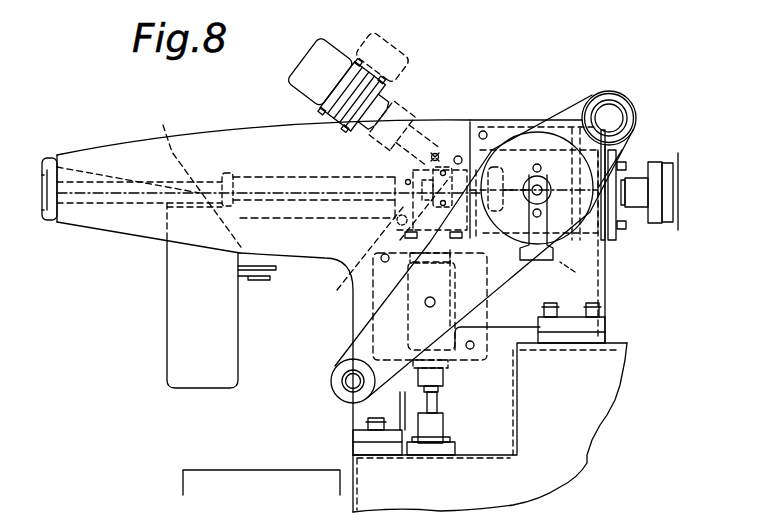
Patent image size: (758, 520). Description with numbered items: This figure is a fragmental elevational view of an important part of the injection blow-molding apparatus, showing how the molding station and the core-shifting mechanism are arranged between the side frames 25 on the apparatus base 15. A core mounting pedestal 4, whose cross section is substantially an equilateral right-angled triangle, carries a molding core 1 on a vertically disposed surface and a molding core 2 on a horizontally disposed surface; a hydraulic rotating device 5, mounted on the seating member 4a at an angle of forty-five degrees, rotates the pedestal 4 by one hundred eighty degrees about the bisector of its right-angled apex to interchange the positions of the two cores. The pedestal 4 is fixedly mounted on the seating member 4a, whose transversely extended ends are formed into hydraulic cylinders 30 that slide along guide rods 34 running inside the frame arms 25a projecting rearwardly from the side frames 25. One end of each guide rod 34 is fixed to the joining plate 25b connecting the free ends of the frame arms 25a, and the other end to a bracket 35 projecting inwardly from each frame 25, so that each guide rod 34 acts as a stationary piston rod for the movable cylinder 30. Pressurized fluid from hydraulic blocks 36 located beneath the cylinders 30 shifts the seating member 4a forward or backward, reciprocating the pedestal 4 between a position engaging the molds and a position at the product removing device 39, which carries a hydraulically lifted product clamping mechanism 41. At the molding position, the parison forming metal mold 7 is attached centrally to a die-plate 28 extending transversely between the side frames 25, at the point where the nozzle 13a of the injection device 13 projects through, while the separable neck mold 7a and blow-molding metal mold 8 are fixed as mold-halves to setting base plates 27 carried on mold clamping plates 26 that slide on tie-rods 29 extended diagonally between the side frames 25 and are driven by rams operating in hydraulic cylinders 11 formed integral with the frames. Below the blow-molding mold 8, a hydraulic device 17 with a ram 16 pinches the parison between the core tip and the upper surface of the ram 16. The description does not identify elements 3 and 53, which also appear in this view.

The molding core 1 is at (572, 152).
The molding core 2 is at (453, 283).
The drive shaft 3 is at (283, 172).
The core mounting pedestal 4 is at (450, 160).
The seating member 4a is at (352, 166).
The rotating device 5 is at (352, 55).
The parison forming metal mold 7 is at (543, 152).
The neck mold 7a is at (498, 152).
The blow-molding metal mold 8 is at (378, 312).
The hydraulic cylinder 11 is at (578, 96).
The injection device 13 is at (672, 217).
The nozzle 13a is at (627, 152).
The apparatus frame 15 is at (587, 438).
The ram 16 is at (440, 372).
The hydraulic device 17 is at (435, 428).
The side frame 25 is at (505, 126).
The frame arm 25a is at (218, 150).
The joining plate 25b is at (48, 165).
The mold clamping plate 26 is at (510, 277).
The setting base plate 27 is at (575, 272).
The die-plate 28 is at (616, 236).
The tie-rod 29 is at (617, 112).
The hydraulic cylinder 30 is at (263, 186).
The guide rod 34 is at (195, 175).
The bracket 35 is at (433, 151).
The hydraulic block 36 is at (298, 213).
The product removing device 39 is at (163, 290).
The product clamping mechanism 41 is at (265, 279).
The base plate 53 is at (238, 472).